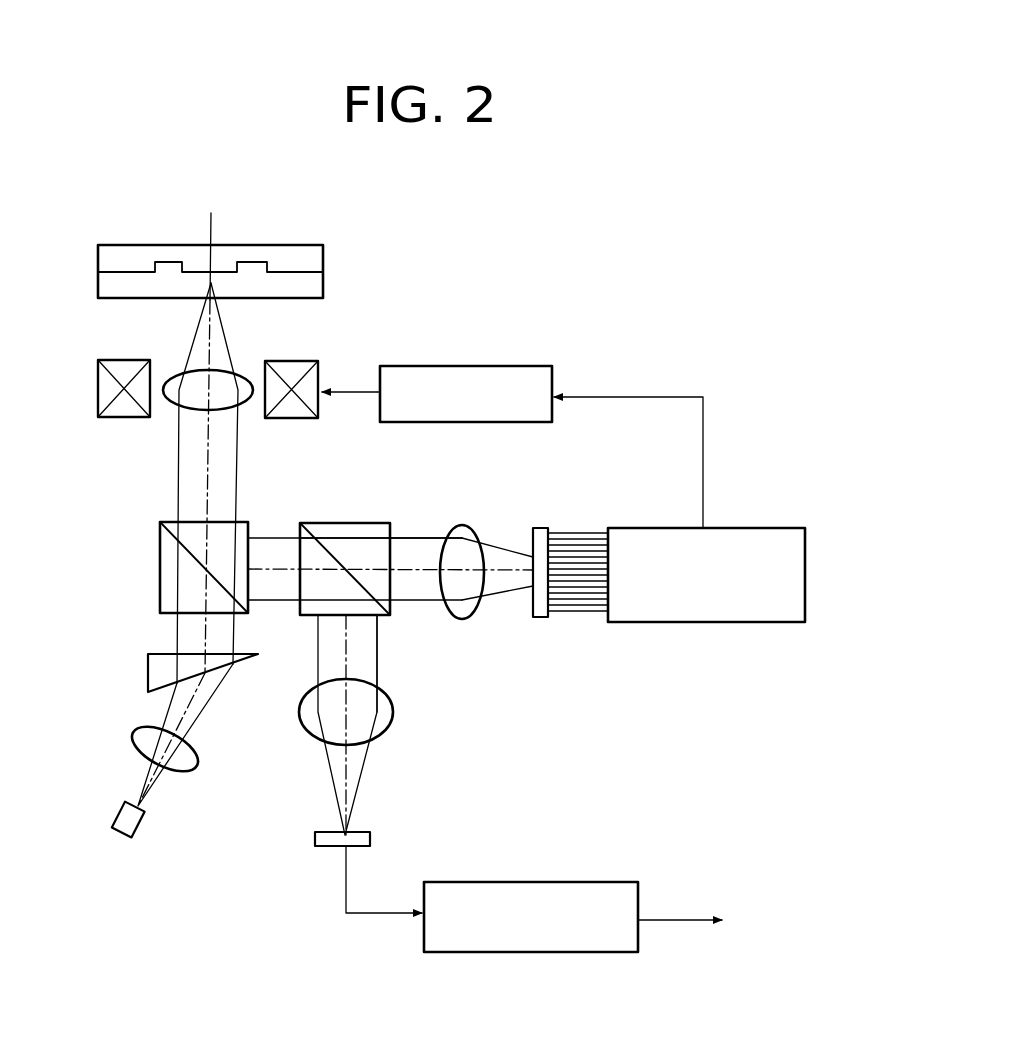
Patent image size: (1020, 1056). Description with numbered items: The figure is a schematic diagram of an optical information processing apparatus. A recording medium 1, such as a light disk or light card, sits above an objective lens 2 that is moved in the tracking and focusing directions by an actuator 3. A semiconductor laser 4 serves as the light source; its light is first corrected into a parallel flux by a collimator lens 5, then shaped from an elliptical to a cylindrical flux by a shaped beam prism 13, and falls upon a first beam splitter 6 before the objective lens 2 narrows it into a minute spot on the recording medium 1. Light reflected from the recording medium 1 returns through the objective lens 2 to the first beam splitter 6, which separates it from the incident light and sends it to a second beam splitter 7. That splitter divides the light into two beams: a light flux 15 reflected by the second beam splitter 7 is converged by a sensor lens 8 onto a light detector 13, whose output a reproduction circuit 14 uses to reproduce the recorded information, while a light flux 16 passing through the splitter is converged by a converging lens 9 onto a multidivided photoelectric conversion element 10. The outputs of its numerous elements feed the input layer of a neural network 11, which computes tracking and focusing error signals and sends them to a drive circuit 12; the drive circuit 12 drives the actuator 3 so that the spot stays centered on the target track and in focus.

The recording medium 1 is at (279, 247).
The objective lens 2 is at (172, 406).
The actuator 3 is at (120, 360).
The semiconductor laser 4 is at (145, 829).
The collimator lens 5 is at (195, 765).
The first beam splitter 6 is at (160, 575).
The second beam splitter 7 is at (338, 523).
The sensor lens 8 is at (385, 732).
The converging lens 9 is at (466, 620).
The multidivided photoelectric conversion element 10 is at (541, 620).
The neural network 11 is at (696, 624).
The drive circuit 12 is at (498, 365).
The shaped beam prism / light detector 13 is at (148, 665).
The reproduction circuit 14 is at (540, 953).
The light flux 15 is at (377, 667).
The light flux 16 is at (415, 538).